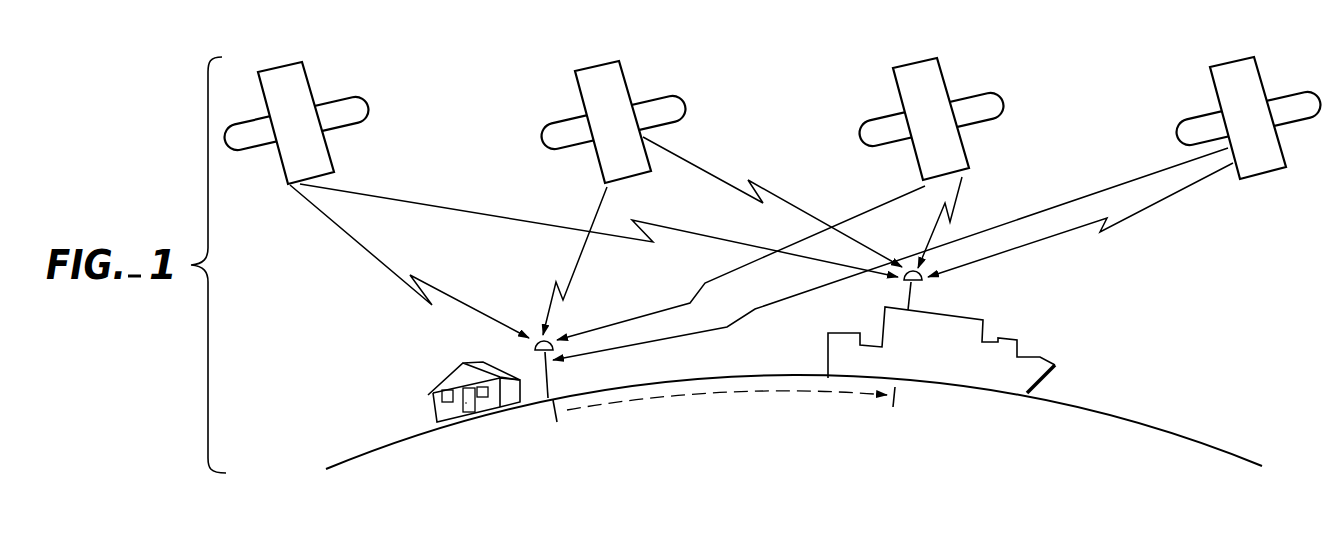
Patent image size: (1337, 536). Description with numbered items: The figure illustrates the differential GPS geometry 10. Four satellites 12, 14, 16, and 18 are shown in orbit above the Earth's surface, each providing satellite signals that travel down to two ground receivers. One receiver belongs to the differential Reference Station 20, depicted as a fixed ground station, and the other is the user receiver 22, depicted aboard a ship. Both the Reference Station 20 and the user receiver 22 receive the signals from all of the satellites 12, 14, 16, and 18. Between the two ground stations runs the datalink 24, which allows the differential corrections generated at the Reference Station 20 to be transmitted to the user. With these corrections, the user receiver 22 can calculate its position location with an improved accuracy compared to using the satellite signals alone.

The differential GPS geometry 10 is at (311, 300).
The satellite 12 is at (310, 83).
The satellite 14 is at (628, 80).
The satellite 16 is at (945, 78).
The satellite 18 is at (1262, 76).
The differential Reference Station 20 is at (443, 386).
The user receiver 22 is at (1040, 357).
The datalink 24 is at (797, 394).